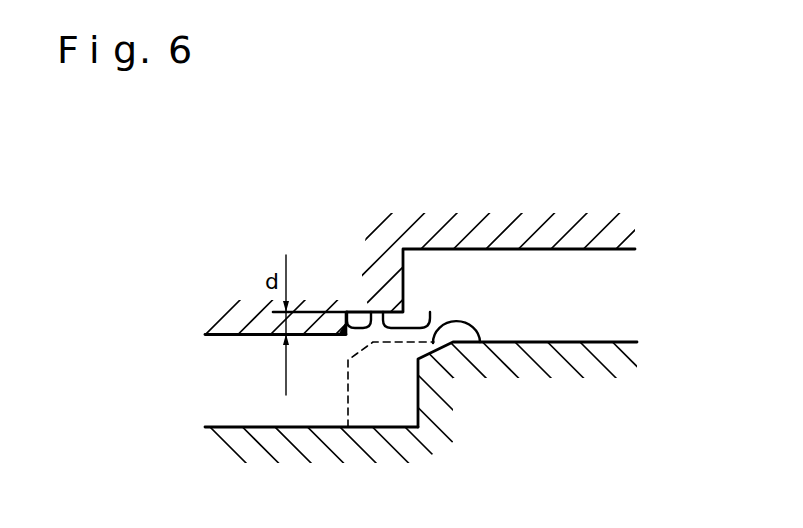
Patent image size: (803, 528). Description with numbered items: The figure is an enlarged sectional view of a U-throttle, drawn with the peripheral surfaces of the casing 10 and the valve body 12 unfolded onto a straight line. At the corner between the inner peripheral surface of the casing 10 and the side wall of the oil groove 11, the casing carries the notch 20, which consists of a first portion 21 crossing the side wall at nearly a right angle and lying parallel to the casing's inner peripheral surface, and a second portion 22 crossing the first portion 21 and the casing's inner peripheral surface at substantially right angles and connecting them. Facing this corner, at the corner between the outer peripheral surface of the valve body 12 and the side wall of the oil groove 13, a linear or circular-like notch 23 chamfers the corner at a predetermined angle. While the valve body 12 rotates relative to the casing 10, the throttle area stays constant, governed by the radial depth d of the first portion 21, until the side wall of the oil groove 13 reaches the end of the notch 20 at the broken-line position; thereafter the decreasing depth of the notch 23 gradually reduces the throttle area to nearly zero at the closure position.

The casing 10 is at (236, 316).
The oil groove 11 is at (565, 250).
The valve body 12 is at (244, 452).
The oil groove 13 is at (259, 427).
The notch 20 is at (363, 156).
The first portion 21 is at (430, 312).
The second portion 22 is at (371, 312).
The notch 23 is at (480, 342).